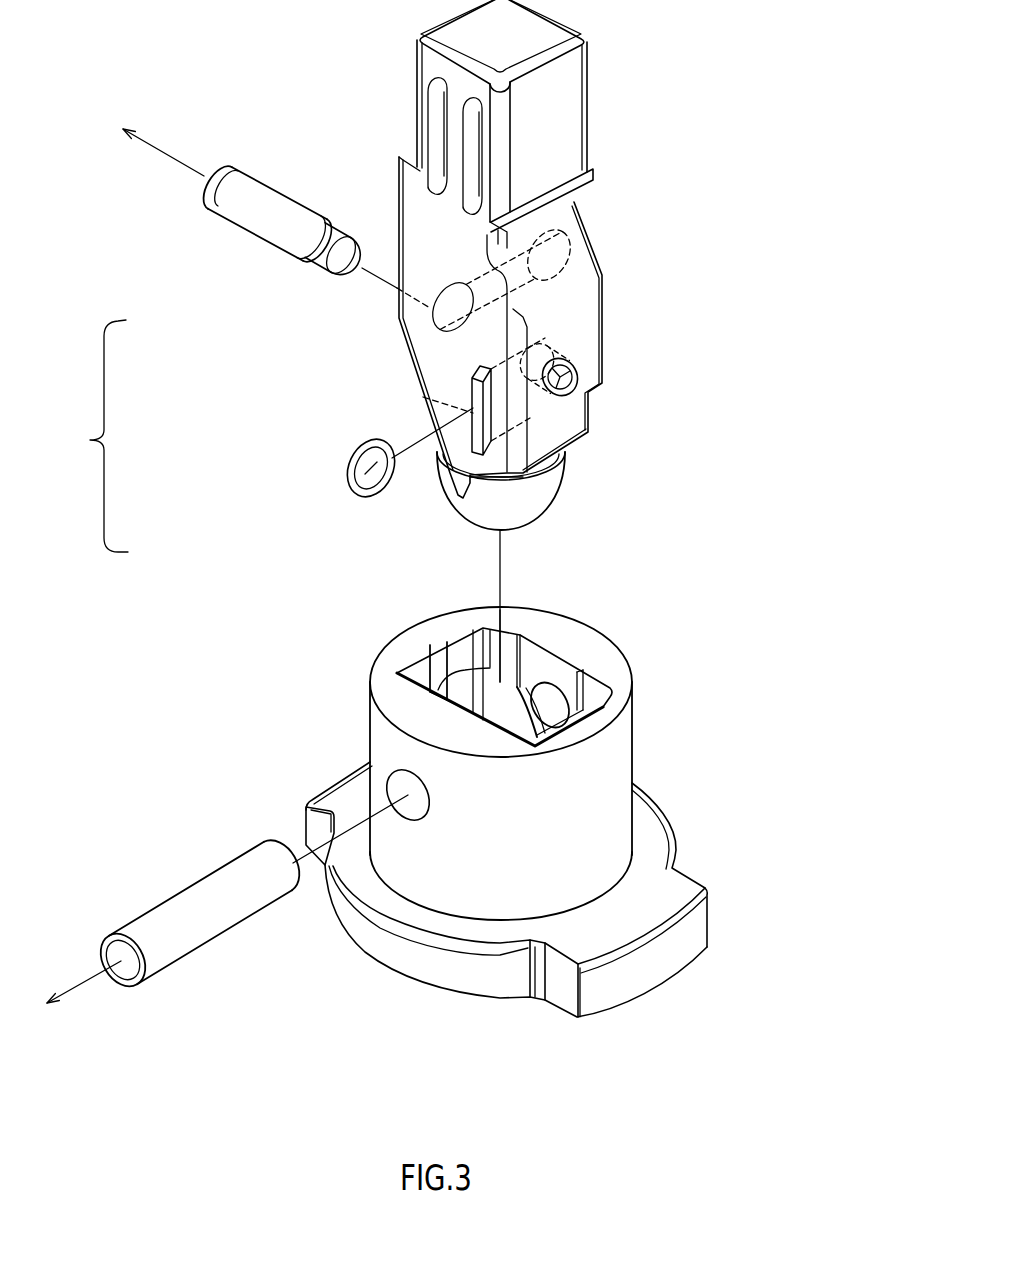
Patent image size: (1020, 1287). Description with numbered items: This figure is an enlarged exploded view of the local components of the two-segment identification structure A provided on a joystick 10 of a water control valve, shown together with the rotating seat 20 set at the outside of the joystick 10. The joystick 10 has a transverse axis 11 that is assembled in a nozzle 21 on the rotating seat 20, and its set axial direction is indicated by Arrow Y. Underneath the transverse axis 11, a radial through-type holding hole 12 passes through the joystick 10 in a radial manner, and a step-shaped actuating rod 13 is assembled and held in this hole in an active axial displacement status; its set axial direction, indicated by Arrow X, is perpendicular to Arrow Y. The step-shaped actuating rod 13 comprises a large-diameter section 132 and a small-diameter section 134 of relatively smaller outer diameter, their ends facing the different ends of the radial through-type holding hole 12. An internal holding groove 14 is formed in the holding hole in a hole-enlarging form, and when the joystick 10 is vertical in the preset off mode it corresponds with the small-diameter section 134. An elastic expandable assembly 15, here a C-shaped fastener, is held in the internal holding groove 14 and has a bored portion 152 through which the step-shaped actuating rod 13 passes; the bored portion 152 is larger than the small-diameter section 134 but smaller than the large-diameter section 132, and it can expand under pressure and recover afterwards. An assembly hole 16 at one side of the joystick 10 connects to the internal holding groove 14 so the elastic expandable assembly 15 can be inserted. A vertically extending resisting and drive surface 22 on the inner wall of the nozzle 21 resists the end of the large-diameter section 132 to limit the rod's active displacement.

The joystick 10 is at (464, 341).
The transverse axis 11 is at (213, 937).
The radial through-type holding hole 12 is at (575, 380).
The step-shaped actuating rod 13 is at (244, 264).
The large-diameter section 132 is at (226, 216).
The small-diameter section 134 is at (318, 267).
The internal holding groove 14 is at (553, 345).
The elastic expandable assembly 15 is at (302, 485).
The bored portion 152 is at (373, 470).
The assembly hole 16 is at (477, 400).
The rotating seat 20 is at (456, 777).
The nozzle 21 is at (507, 717).
The resisting and drive surface 22 is at (453, 697).
The two-segment identification structure A is at (90, 440).
The Arrow X is at (166, 151).
The Arrow Y is at (75, 984).